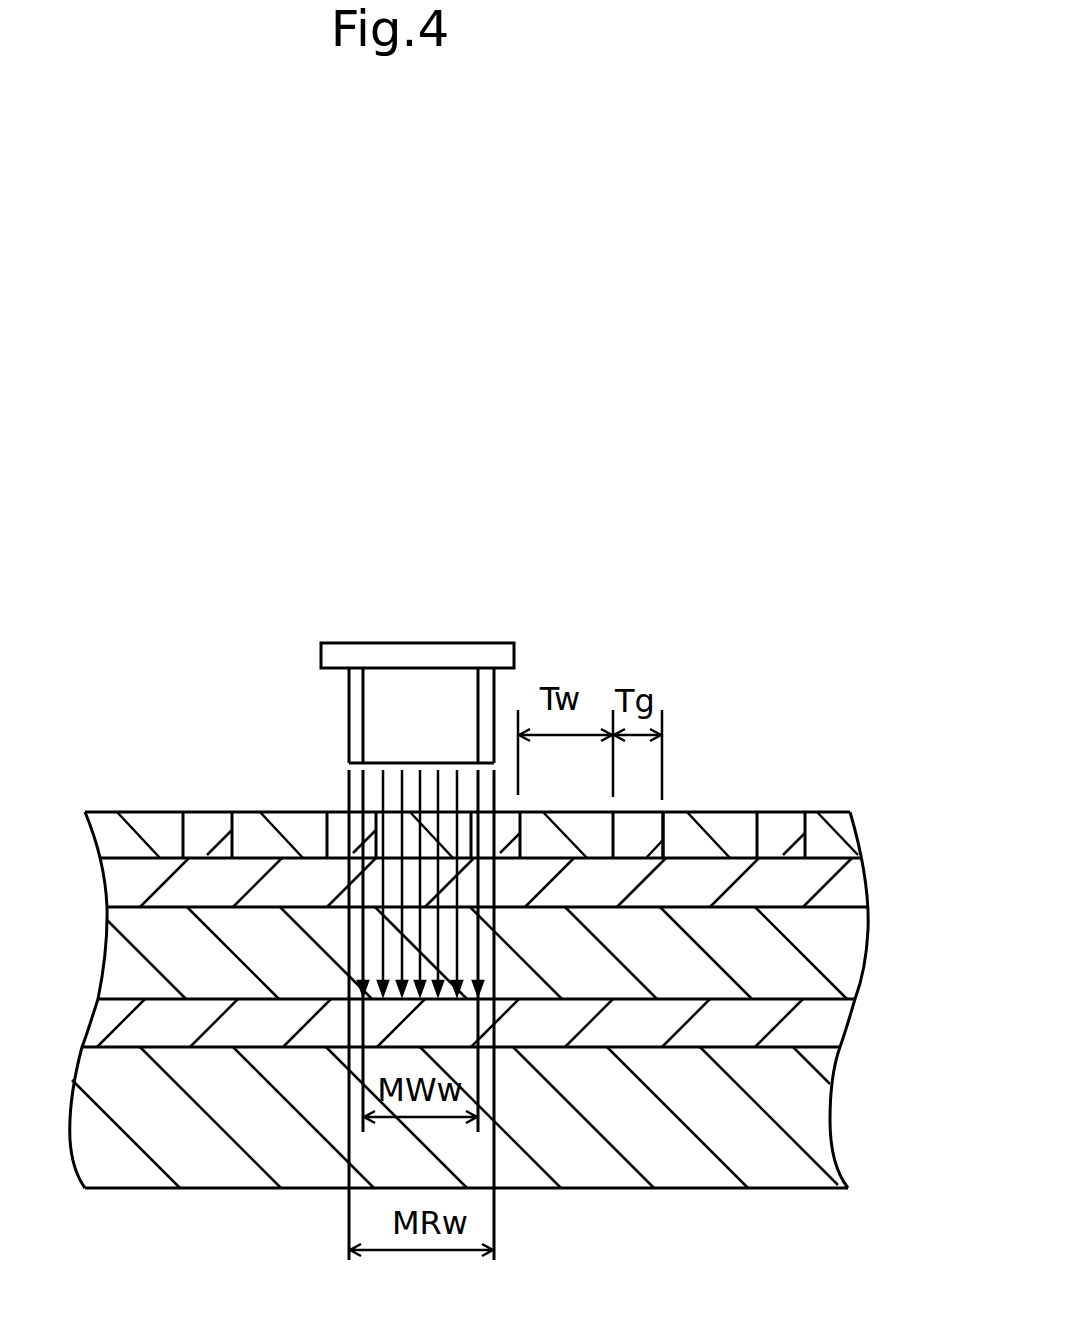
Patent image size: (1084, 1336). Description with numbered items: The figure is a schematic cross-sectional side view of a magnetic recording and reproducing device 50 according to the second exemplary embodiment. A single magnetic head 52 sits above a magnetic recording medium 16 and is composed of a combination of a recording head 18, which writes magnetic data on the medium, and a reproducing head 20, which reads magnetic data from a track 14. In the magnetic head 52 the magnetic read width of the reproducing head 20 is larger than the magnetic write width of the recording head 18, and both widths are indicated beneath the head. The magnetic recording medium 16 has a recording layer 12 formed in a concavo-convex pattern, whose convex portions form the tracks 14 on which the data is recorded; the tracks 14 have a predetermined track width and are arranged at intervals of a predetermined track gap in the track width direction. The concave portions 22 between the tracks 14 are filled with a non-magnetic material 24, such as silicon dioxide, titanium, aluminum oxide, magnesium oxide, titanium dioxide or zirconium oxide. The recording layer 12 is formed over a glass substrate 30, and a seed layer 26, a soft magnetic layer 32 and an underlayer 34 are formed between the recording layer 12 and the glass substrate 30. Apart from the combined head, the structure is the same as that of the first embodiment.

The magnetic recording and reproducing device 50 is at (510, 400).
The magnetic head 52 is at (428, 630).
The recording head 18 is at (378, 698).
The reproducing head 20 is at (349, 723).
The magnetic recording medium 16 is at (187, 775).
The recording layer 12 is at (858, 828).
The track 14 is at (730, 825).
The concave portion 22 is at (638, 833).
The non-magnetic material 24 is at (660, 885).
The seed layer 26 is at (855, 890).
The soft magnetic layer 32 is at (868, 940).
The underlayer 34 is at (850, 1025).
The glass substrate 30 is at (828, 1113).